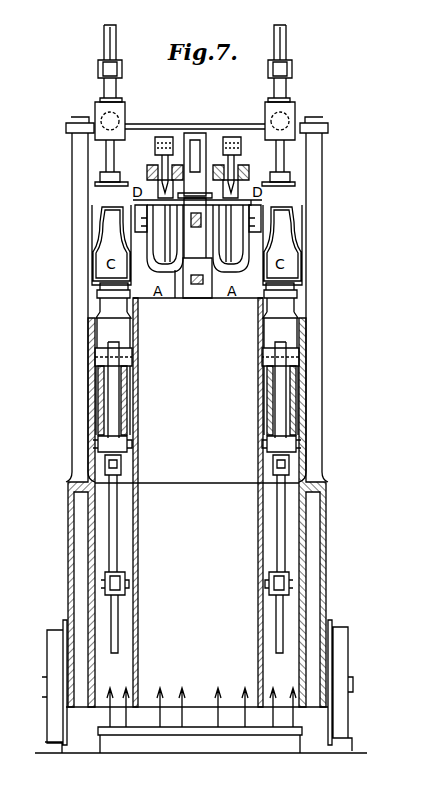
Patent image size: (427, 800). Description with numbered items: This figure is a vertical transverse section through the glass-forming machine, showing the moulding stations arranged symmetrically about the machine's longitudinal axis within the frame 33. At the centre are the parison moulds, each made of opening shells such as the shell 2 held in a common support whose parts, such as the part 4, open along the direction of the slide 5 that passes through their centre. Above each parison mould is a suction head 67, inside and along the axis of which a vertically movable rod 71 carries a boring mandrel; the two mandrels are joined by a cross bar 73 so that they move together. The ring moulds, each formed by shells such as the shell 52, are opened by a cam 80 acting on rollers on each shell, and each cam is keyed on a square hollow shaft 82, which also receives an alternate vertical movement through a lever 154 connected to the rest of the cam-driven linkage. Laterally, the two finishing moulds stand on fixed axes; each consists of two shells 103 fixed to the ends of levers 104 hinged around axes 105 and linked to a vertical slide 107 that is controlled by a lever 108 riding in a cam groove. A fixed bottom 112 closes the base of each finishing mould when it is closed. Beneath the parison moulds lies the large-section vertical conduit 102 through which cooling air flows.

The opening shell 2 is at (198, 238).
The support part 4 is at (198, 229).
The slide 5 is at (197, 248).
The frame 33 is at (70, 568).
The ring mould shell 52 is at (158, 190).
The suction head 67 is at (150, 168).
The rod 71 is at (163, 163).
The cross bar 73 is at (212, 133).
The cam 80 is at (95, 185).
The square shaft 82 is at (116, 50).
The vertical conduit 102 is at (198, 502).
The finishing mould shell 103 is at (98, 263).
The lever 104 is at (100, 436).
The axis 105 is at (97, 357).
The vertical slide 107 is at (112, 402).
The lever 108 is at (277, 613).
The bottom 112 is at (98, 285).
The lever 154 is at (98, 69).